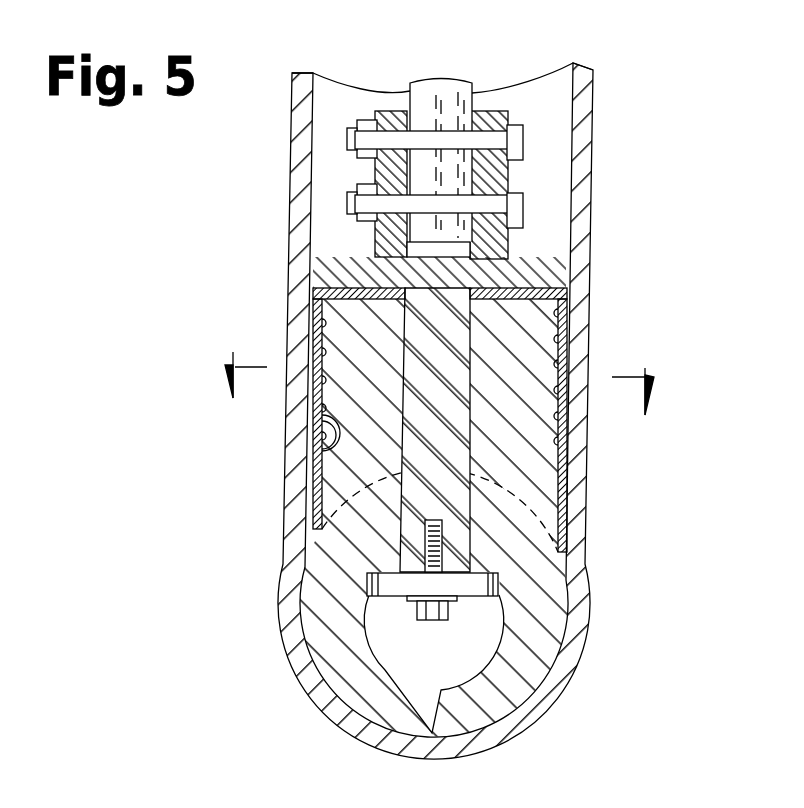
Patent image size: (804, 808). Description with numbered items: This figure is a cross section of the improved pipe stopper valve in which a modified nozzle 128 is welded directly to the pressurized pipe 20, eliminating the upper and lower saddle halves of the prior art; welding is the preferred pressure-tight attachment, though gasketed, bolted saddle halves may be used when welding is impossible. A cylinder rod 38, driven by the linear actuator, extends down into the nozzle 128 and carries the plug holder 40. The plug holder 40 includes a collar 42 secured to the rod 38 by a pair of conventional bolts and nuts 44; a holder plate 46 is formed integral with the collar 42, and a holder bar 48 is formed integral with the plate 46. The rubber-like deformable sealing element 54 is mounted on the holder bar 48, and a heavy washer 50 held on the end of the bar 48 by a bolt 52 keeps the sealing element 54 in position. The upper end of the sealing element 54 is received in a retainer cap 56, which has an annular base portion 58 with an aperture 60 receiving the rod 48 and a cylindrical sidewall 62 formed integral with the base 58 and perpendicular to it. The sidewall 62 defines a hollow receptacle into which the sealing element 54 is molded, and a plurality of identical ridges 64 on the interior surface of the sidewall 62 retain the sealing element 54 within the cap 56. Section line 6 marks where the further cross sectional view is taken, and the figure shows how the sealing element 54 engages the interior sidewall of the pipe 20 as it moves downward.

The pipe 20 is at (565, 672).
The nozzle 128 is at (583, 132).
The cylinder rod 38 is at (432, 88).
The plug holder 40 is at (348, 173).
The collar 42 is at (497, 253).
The bolts and nuts 44 is at (517, 211).
The holder plate 46 is at (367, 268).
The holder bar 48 is at (443, 370).
The heavy washer 50 is at (475, 588).
The bolt 52 is at (440, 612).
The sealing element 54 is at (347, 635).
The retainer cap 56 is at (305, 307).
The annular base portion 58 is at (560, 303).
The aperture 60 is at (323, 322).
The cylindrical sidewall 62 is at (563, 437).
The ridges 64 is at (302, 480).
The section line 6— 6 is at (439, 404).